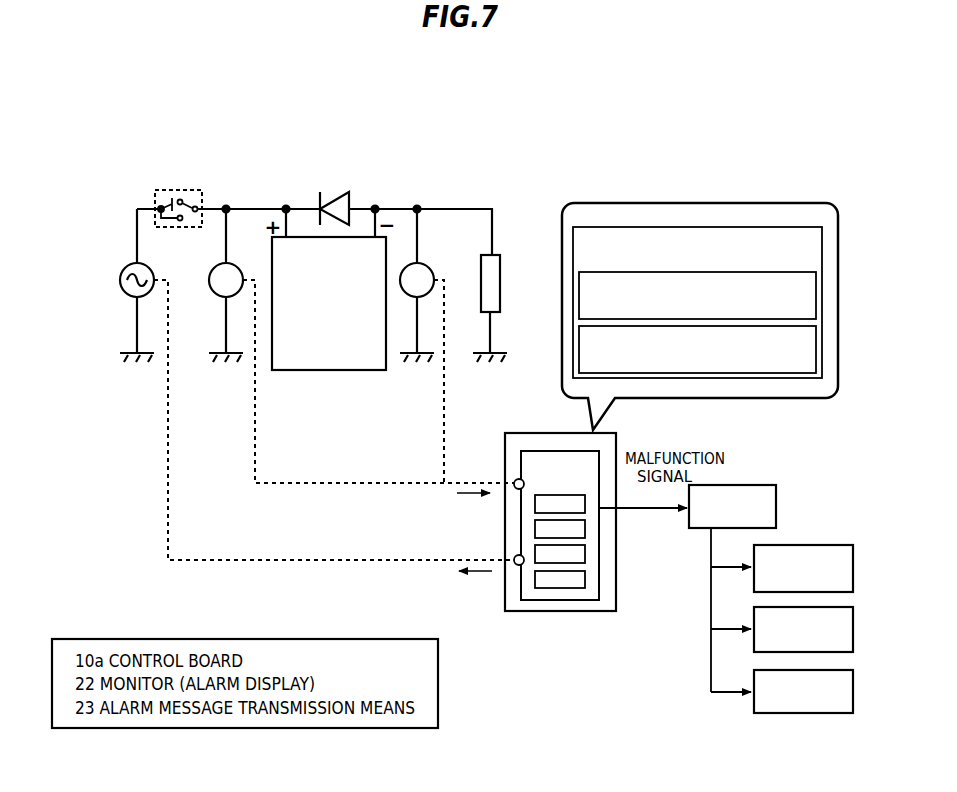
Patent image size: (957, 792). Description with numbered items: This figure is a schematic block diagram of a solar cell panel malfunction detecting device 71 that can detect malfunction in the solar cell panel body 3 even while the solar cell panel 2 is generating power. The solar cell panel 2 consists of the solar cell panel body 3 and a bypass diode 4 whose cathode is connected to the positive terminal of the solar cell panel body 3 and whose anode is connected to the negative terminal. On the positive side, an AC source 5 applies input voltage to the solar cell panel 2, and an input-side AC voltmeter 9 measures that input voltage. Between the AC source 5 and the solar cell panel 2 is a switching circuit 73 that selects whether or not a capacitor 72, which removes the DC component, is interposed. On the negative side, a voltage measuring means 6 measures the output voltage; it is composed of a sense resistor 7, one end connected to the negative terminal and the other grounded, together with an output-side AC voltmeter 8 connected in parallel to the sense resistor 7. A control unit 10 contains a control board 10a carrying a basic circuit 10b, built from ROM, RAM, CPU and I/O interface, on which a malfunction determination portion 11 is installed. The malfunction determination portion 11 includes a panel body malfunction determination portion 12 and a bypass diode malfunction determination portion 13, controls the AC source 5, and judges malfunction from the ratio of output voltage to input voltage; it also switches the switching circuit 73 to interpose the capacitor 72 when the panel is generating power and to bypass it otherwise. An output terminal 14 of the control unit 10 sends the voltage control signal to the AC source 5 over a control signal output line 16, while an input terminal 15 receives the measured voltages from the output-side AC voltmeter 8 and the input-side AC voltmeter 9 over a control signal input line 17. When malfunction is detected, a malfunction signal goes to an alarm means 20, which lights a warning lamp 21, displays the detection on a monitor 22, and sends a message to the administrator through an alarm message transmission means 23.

The solar cell panel 2 is at (329, 273).
The solar cell panel body 3 is at (368, 371).
The bypass diode 4 is at (342, 192).
The AC source 5 is at (125, 268).
The voltage measuring means 6 is at (498, 261).
The sense resistor 7 is at (499, 256).
The output-side AC voltmeter 8 is at (428, 265).
The input-side AC voltmeter 9 is at (212, 268).
The control unit 10 is at (553, 537).
The control board 10a is at (603, 611).
The basic circuit 10b is at (557, 600).
The malfunction determination portion 11 is at (726, 302).
The panel body malfunction determination portion 12 is at (816, 296).
The bypass diode malfunction determination portion 13 is at (816, 346).
The output terminal 14 is at (516, 566).
The input terminal 15 is at (513, 479).
The control signal output line 16 is at (282, 564).
The control signal input line 17 is at (296, 488).
The alarm means 20 is at (754, 582).
The warning lamp 21 is at (754, 553).
The monitor 22 is at (754, 617).
The alarm message transmission means 23 is at (754, 678).
The solar cell panel malfunction detecting device 71 is at (721, 286).
The capacitor 72 is at (163, 202).
The switching circuit 73 is at (197, 190).